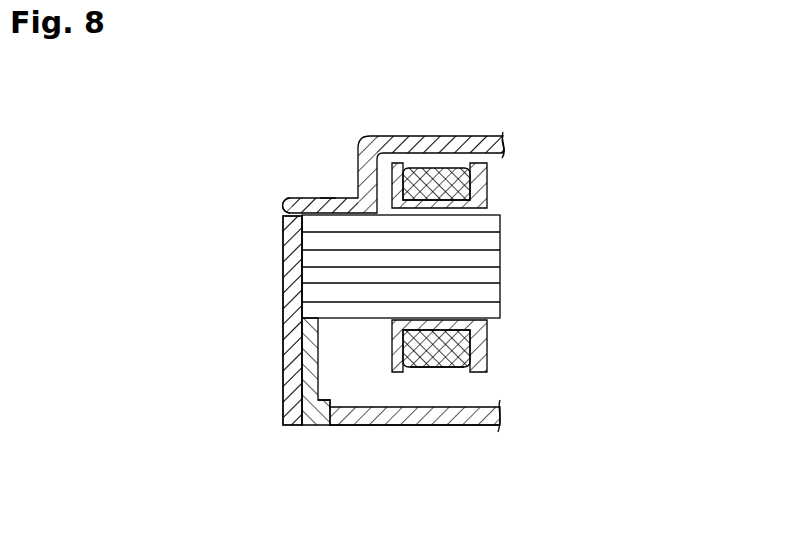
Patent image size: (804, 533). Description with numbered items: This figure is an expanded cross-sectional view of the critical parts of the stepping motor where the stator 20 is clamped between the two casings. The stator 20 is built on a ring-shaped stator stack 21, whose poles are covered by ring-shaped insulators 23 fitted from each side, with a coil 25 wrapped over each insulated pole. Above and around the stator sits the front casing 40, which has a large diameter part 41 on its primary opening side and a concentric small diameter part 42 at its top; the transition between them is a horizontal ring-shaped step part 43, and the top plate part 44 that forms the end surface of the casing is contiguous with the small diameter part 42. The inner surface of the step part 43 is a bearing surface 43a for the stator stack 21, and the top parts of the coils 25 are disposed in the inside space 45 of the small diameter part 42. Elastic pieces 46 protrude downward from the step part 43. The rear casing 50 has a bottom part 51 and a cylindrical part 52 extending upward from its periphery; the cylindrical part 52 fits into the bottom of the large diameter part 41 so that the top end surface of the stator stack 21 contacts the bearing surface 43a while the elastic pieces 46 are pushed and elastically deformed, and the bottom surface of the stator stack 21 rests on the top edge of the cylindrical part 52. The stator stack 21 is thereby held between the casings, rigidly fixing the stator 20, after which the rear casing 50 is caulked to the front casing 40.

The stator 20 is at (345, 333).
The stator stack 21 is at (500, 273).
The insulator 23 is at (487, 192).
The coil 25 is at (440, 366).
The front casing 40 is at (276, 370).
The large diameter part 41 is at (283, 317).
The small diameter part 42 is at (357, 173).
The step part 43 is at (305, 197).
The bearing surface 43a is at (284, 221).
The top plate part 44 is at (466, 137).
The inside space 45 is at (415, 162).
The elastic piece 46 is at (328, 199).
The rear casing 50 is at (456, 434).
The bottom part 51 is at (428, 427).
The cylindrical part 52 is at (320, 373).